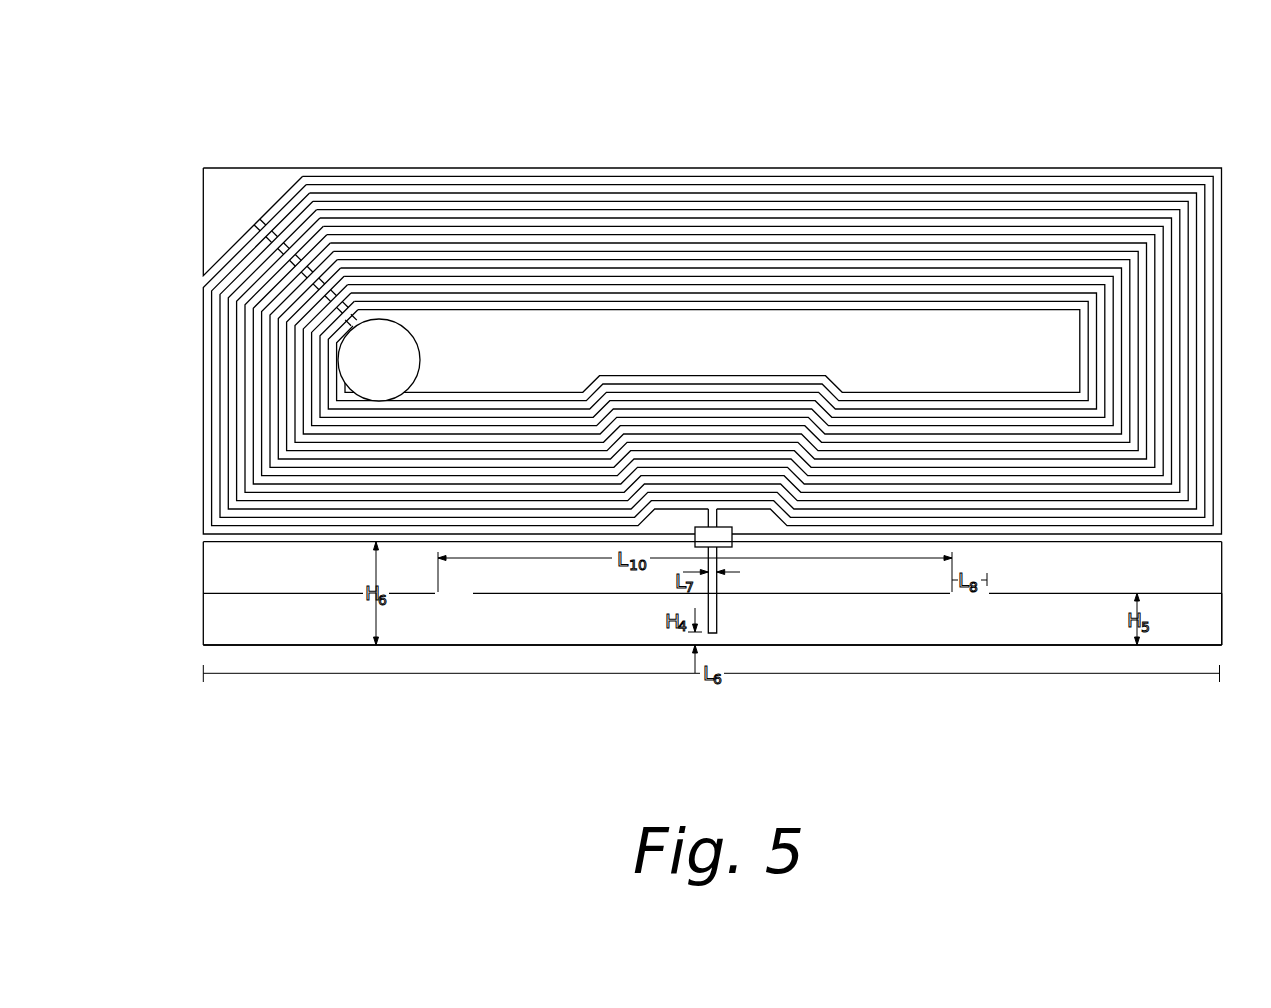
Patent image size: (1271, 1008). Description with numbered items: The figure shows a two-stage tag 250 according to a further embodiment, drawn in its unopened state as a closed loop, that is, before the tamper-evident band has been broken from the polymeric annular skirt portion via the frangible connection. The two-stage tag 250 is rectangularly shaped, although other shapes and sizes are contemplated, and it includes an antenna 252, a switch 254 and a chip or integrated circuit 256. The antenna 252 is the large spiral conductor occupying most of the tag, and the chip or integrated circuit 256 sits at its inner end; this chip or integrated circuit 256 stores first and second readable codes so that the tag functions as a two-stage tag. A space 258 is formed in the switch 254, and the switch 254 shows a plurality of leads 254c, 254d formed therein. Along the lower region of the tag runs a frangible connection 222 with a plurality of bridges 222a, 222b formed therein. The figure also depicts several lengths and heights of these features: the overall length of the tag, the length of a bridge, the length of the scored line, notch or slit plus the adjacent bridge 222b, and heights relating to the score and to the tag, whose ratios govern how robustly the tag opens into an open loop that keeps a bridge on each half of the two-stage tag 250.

The 2-stage tag 250 is at (650, 391).
The antenna 252 is at (168, 187).
The frangible connection 222 is at (712, 642).
The bridge 222a is at (450, 612).
The bridge 222b is at (968, 607).
The switch 254 is at (625, 645).
The lead 254c is at (562, 568).
The lead 254d is at (850, 573).
The chip or integrated circuit 256 is at (728, 547).
The space 258 is at (718, 603).